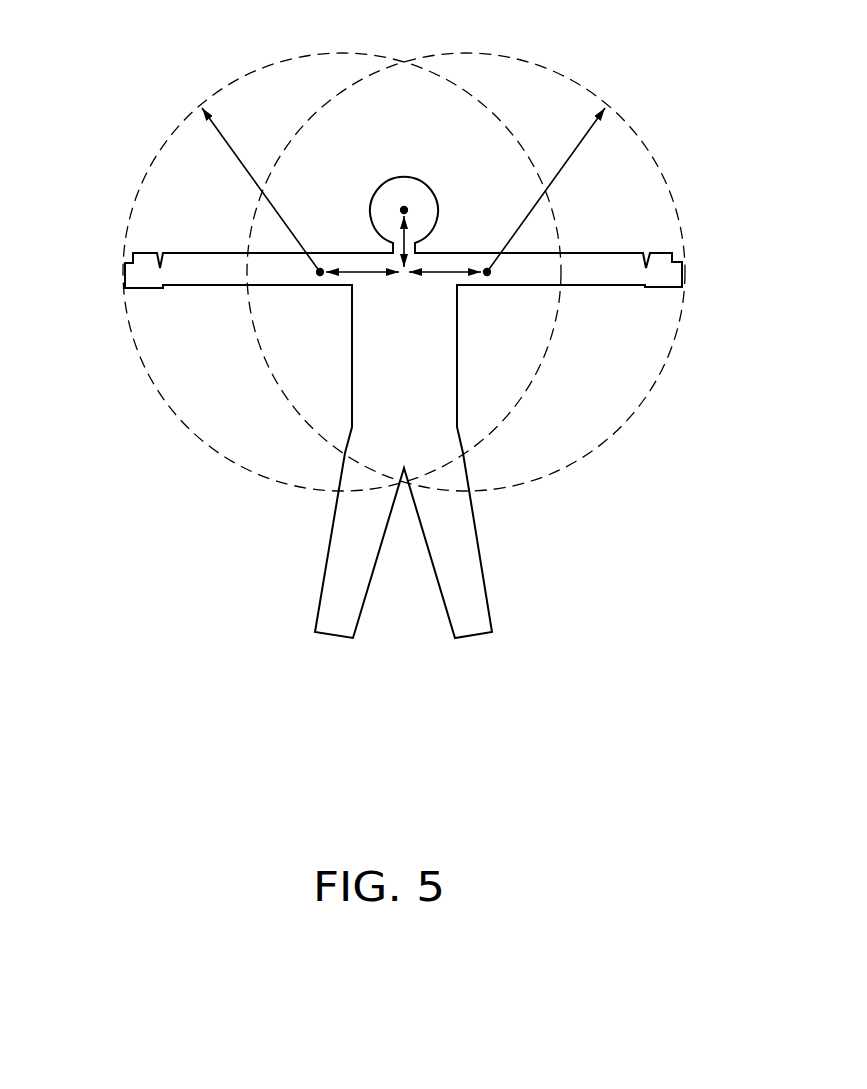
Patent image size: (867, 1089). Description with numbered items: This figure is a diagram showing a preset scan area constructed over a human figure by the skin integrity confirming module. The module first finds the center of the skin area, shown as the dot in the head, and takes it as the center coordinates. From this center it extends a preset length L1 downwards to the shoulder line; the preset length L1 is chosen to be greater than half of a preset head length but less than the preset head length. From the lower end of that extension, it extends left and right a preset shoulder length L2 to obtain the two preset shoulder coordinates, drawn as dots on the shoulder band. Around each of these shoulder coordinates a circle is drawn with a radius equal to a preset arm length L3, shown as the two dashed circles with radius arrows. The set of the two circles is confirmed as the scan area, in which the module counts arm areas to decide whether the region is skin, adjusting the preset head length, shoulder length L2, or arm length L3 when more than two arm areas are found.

The preset length L1 is at (408, 238).
The preset shoulder length L2 is at (366, 275).
The preset arm length L3 is at (280, 232).